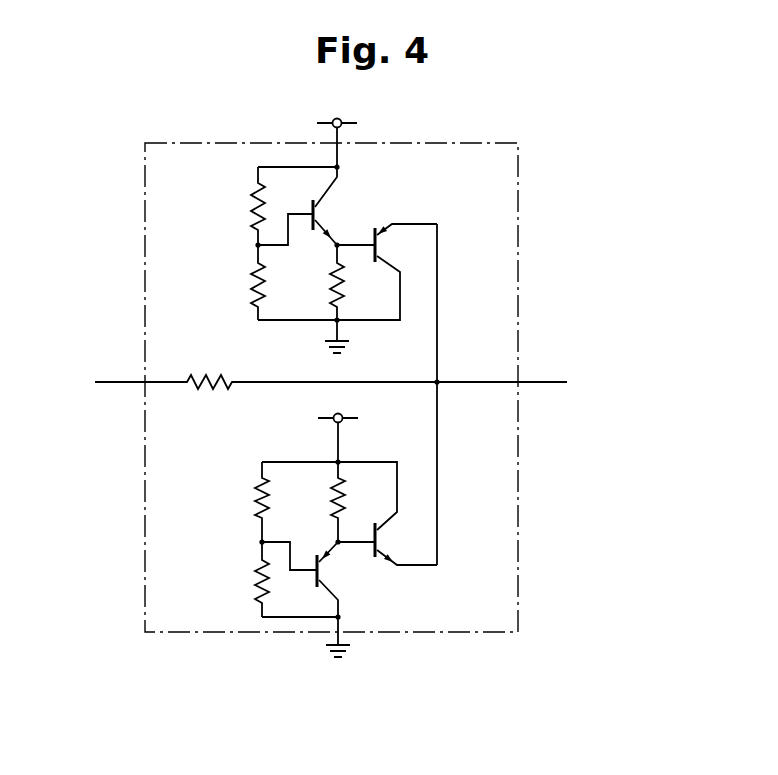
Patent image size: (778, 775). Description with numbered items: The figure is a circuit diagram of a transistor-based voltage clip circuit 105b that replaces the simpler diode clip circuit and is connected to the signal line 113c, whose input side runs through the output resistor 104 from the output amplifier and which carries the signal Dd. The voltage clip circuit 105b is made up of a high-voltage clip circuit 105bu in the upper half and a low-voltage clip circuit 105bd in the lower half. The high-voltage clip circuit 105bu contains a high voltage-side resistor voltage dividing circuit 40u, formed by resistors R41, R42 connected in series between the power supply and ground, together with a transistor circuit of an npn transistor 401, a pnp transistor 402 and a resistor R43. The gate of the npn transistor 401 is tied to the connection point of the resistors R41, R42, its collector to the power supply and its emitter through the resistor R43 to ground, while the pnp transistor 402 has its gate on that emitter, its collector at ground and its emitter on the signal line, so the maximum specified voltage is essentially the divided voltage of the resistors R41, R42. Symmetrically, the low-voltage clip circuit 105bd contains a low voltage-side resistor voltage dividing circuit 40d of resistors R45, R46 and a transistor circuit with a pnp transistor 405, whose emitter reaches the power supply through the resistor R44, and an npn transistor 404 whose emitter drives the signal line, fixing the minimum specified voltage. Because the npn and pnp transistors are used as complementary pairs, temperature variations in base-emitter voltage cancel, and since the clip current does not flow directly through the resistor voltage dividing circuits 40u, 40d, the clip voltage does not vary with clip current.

The voltage clip circuit 105b is at (587, 133).
The high-voltage clip circuit 105bu is at (484, 251).
The low-voltage clip circuit 105bd is at (484, 560).
The high voltage-side resistor voltage dividing circuit 40u is at (191, 225).
The low voltage-side resistor voltage dividing circuit 40d is at (203, 545).
The output resistor 104 is at (198, 372).
The signal line 113c is at (451, 381).
The drive signal Dd is at (543, 381).
The resistor R41 is at (253, 208).
The resistor R42 is at (253, 282).
The resistor R43 is at (332, 287).
The resistor R44 is at (326, 488).
The resistor R45 is at (255, 503).
The resistor R46 is at (255, 580).
The npn transistor 401 is at (322, 201).
The pnp transistor 402 is at (375, 235).
The npn transistor 404 is at (385, 528).
The pnp transistor 405 is at (332, 581).